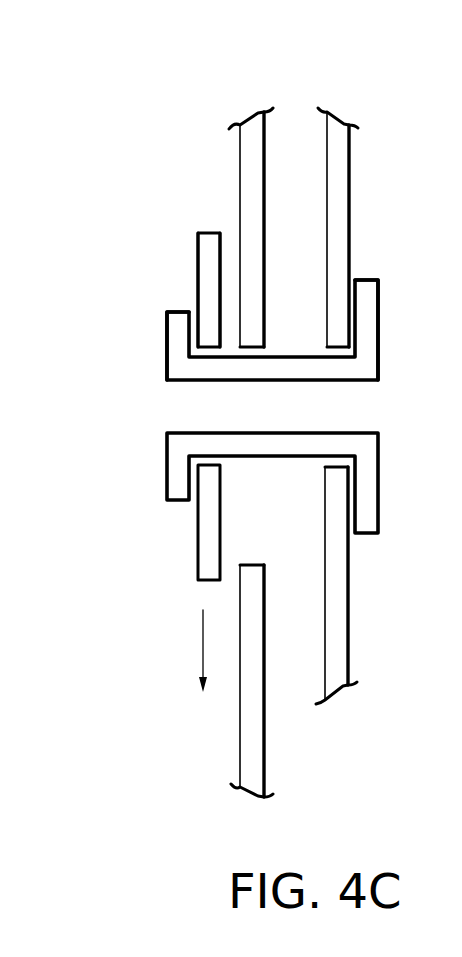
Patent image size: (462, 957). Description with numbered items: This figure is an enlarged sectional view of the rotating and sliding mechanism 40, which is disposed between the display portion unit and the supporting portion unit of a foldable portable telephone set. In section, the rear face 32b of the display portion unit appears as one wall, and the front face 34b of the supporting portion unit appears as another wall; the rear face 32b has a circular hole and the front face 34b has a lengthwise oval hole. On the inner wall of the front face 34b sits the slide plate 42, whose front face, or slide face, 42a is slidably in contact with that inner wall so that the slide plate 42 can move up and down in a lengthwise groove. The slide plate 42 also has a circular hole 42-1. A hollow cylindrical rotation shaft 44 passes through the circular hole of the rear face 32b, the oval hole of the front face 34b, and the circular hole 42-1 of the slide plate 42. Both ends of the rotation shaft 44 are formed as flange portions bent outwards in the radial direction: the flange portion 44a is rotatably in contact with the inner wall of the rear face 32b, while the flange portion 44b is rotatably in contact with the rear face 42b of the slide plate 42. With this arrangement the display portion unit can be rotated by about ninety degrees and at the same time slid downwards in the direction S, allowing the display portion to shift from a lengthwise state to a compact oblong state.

The rotating and sliding mechanism 40 is at (145, 408).
The slide plate 42 is at (206, 248).
The front face (slide face) of the slide plate 42a is at (220, 255).
The rear face of the slide plate 42b is at (198, 272).
The circular hole of the slide plate 42-1 is at (208, 461).
The rotation shaft 44 is at (352, 440).
The flange portion 44a is at (378, 325).
The flange portion 44b is at (167, 348).
The rear face of the display portion unit 32b is at (325, 140).
The front face of the supporting portion unit 34b is at (265, 182).
The sliding downwards S is at (203, 647).